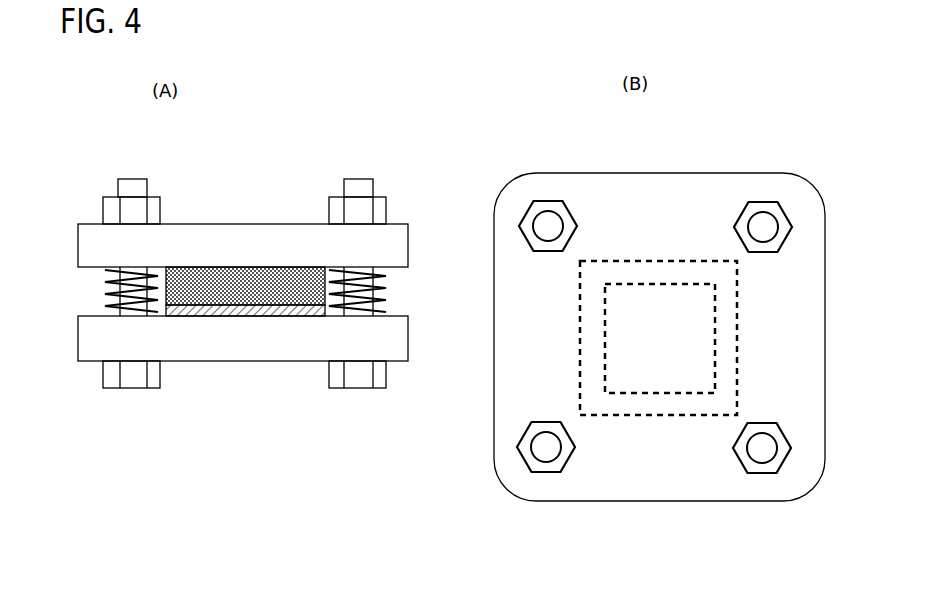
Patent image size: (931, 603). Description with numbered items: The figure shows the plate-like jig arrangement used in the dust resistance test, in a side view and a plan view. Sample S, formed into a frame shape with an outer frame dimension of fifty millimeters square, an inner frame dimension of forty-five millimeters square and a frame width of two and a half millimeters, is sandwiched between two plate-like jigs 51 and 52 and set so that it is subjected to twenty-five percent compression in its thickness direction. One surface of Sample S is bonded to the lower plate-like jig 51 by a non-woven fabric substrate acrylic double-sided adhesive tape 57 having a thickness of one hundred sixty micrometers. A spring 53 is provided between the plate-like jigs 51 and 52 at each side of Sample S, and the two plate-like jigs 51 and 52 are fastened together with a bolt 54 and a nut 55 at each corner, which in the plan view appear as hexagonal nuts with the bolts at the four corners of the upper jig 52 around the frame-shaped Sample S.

The plate-like jig 51 is at (266, 356).
The plate-like jig 52 is at (254, 236).
The spring 53 is at (106, 292).
The bolt 54 is at (128, 388).
The nut 55 is at (108, 208).
The non-woven fabric substrate acrylic double-sided adhesive tape 57 is at (203, 317).
The Sample S is at (200, 272).